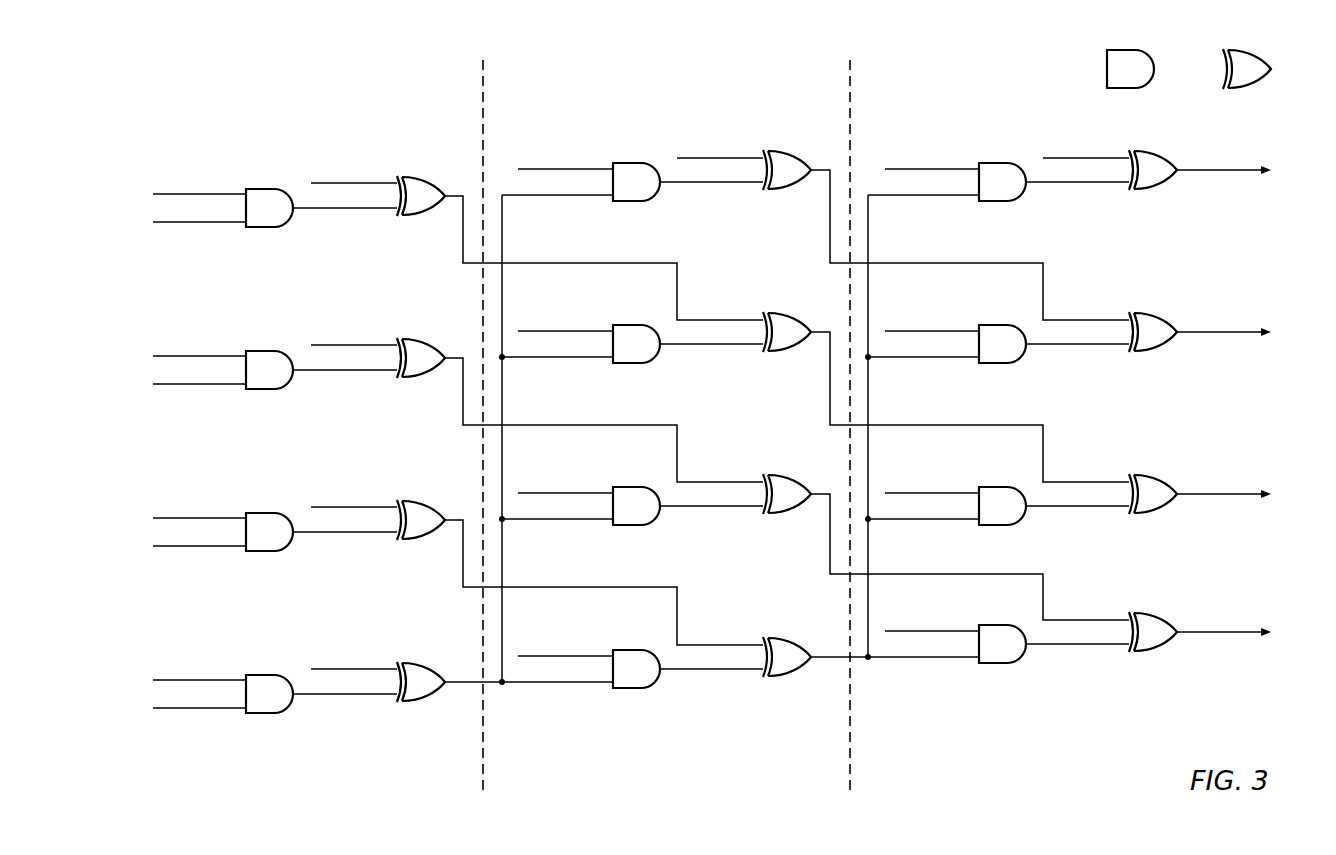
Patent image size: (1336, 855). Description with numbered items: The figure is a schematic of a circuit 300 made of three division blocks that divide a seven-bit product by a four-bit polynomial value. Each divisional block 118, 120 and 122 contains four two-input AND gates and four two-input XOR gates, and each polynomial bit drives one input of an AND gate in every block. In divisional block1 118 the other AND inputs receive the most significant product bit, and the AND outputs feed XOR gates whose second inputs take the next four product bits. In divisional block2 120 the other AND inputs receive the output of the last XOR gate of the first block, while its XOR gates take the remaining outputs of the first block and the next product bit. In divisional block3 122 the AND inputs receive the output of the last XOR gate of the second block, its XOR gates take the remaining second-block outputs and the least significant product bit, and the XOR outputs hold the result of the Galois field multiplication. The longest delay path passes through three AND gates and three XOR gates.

The divisional block1 118 is at (192, 114).
The divisional block2 120 is at (545, 114).
The divisional block3 122 is at (904, 114).
The polynomial division circuit 300 is at (738, 419).